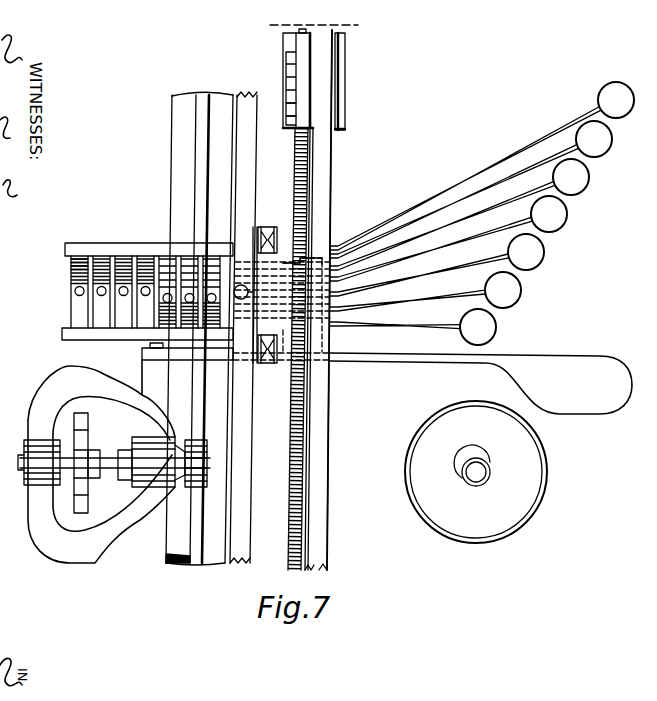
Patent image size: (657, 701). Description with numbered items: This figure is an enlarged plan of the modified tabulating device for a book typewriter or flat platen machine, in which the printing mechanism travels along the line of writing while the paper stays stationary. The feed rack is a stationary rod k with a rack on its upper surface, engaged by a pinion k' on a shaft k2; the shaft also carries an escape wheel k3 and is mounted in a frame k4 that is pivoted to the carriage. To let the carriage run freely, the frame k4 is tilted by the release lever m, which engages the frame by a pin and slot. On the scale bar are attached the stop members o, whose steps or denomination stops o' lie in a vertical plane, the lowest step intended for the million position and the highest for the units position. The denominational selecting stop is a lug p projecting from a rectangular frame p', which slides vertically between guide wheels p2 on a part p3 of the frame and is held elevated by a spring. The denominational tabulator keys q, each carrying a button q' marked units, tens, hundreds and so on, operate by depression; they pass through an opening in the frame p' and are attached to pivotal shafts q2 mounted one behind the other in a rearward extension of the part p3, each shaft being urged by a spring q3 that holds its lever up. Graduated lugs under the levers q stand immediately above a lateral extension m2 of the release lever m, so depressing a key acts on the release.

The rod k is at (211, 328).
The pinion k' is at (231, 471).
The shaft k2 is at (65, 480).
The escape wheel k3 is at (88, 504).
The frame k4 is at (46, 397).
The stop members o is at (307, 76).
The denomination stops o' is at (276, 93).
The lug p is at (323, 349).
The rectangular frame p' is at (320, 300).
The guide wheels p2 is at (262, 366).
The part of the frame p3 is at (258, 203).
The release lever m is at (387, 378).
The lateral extension m2 is at (283, 336).
The denominational tabulator keys q is at (465, 218).
The button q' is at (547, 213).
The pivotal shafts q2 is at (72, 315).
The spring q3 is at (72, 272).